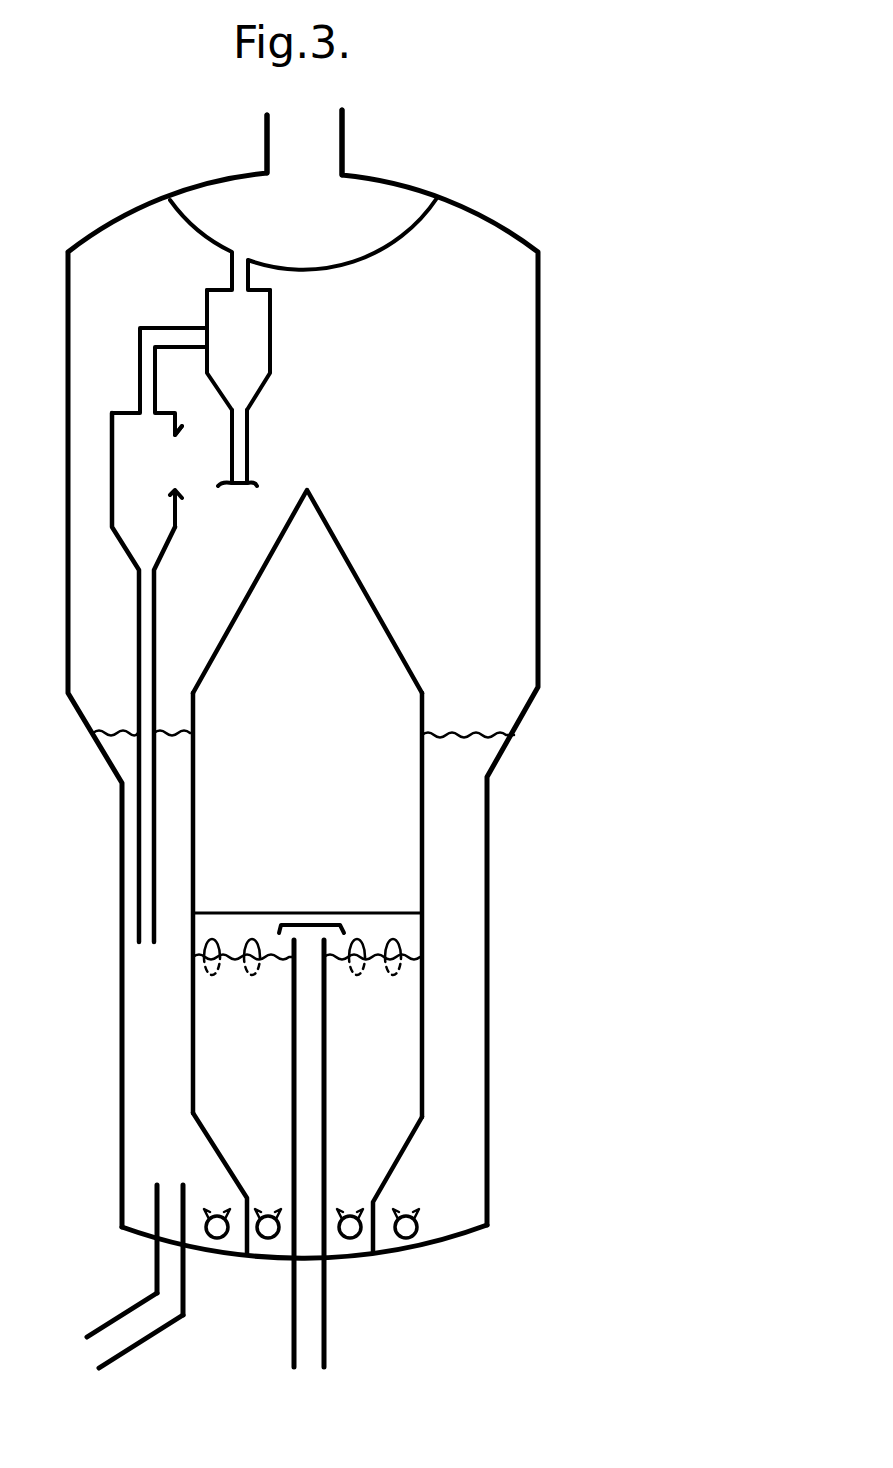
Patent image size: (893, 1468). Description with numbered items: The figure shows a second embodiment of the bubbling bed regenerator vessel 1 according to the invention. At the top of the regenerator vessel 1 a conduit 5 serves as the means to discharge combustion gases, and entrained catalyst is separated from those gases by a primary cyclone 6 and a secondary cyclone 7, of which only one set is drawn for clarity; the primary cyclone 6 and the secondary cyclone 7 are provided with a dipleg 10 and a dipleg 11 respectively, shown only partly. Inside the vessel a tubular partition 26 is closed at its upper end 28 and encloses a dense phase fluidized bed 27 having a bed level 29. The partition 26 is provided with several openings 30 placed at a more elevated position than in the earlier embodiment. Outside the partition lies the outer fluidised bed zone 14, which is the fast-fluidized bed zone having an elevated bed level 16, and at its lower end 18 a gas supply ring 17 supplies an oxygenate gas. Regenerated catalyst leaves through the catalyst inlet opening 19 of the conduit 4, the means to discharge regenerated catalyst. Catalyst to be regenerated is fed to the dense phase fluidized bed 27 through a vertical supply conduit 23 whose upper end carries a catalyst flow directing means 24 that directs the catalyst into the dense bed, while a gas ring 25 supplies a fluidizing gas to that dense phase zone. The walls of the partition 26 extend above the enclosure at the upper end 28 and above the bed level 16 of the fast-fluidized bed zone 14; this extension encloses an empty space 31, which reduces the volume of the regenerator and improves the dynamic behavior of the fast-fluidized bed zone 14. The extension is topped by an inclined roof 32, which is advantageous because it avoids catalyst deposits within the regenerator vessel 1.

The regenerator vessel 1 is at (488, 843).
The conduit 4 is at (97, 1322).
The conduit 5 is at (343, 150).
The primary cyclone 6 is at (178, 513).
The secondary cyclone 7 is at (268, 350).
The dipleg 10 is at (156, 613).
The dipleg 11 is at (249, 447).
The outer fluidised bed zone 14 is at (173, 1059).
The bed level 16 is at (465, 735).
The gas supply ring 17 is at (227, 1238).
The lower end 18 is at (450, 1155).
The catalyst inlet opening 19 is at (172, 1182).
The vertical supply conduit 23 is at (325, 1056).
The catalyst flow directing means 24 is at (305, 924).
The gas ring 25 is at (350, 1236).
The partition 26 is at (423, 1005).
The dense phase fluidized bed 27 is at (390, 1114).
The upper end 28 is at (377, 910).
The bed level 29 is at (233, 962).
The openings 30 is at (212, 940).
The empty space 31 is at (322, 633).
The inclined roof 32 is at (390, 630).